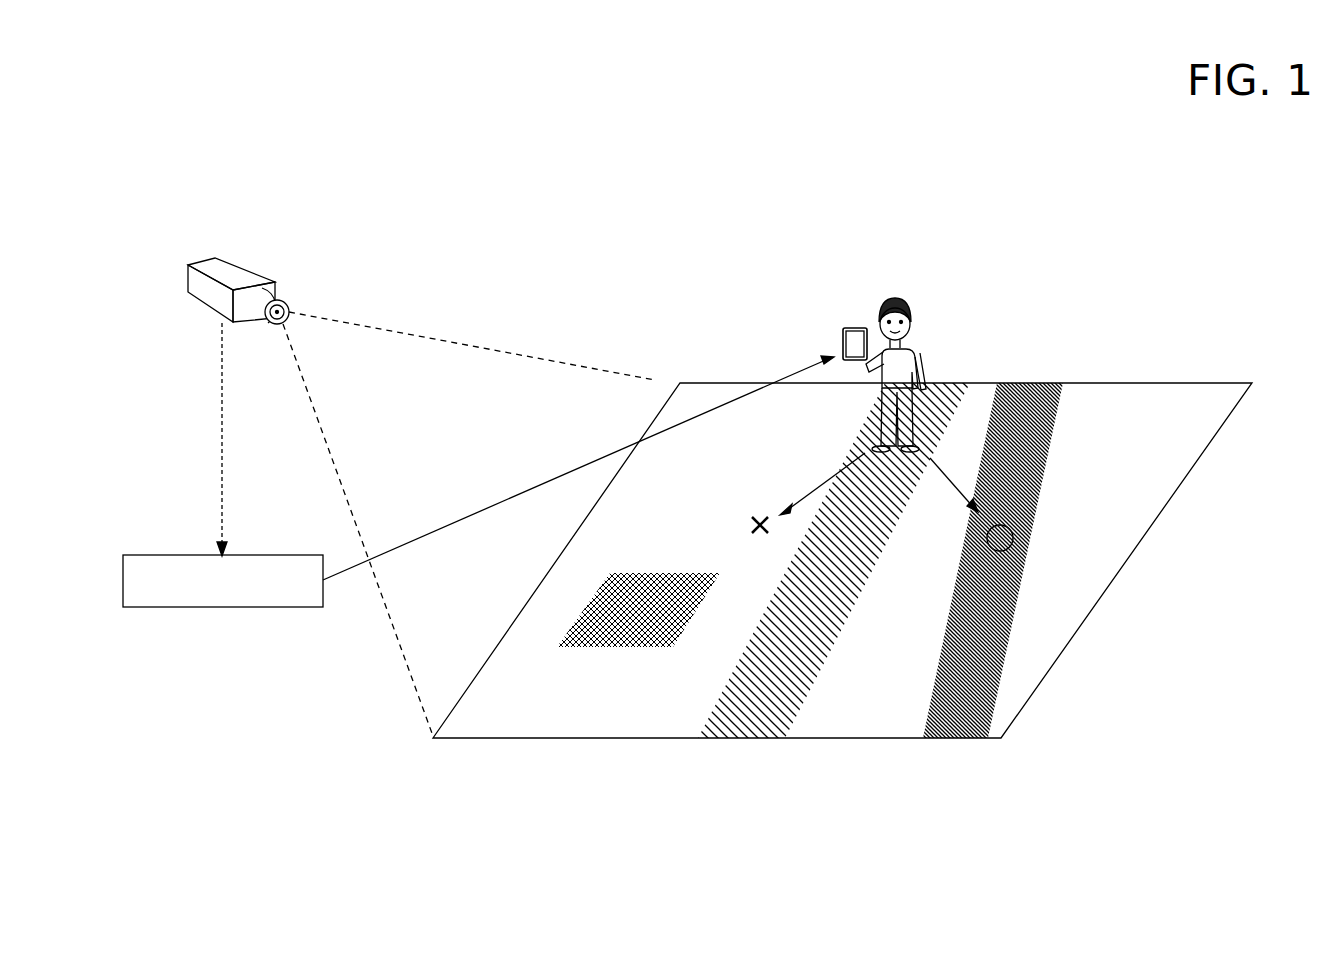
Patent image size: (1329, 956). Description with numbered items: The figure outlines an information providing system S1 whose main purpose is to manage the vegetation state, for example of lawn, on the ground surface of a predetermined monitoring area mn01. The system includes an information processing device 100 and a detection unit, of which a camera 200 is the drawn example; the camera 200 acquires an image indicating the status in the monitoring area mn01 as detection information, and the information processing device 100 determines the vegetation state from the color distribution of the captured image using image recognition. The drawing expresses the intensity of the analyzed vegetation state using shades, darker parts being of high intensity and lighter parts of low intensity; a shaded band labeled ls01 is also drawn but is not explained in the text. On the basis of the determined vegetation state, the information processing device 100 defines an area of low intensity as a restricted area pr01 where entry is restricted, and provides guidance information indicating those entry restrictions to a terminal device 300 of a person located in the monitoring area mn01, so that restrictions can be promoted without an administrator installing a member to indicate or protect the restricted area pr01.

The information providing system S1 is at (198, 200).
The information processing device 100 is at (260, 555).
The camera 200 is at (246, 273).
The terminal device 300 is at (850, 328).
The monitoring area mn01 is at (512, 740).
The restricted area pr01 is at (622, 648).
The line-shaped region ls01 is at (948, 740).